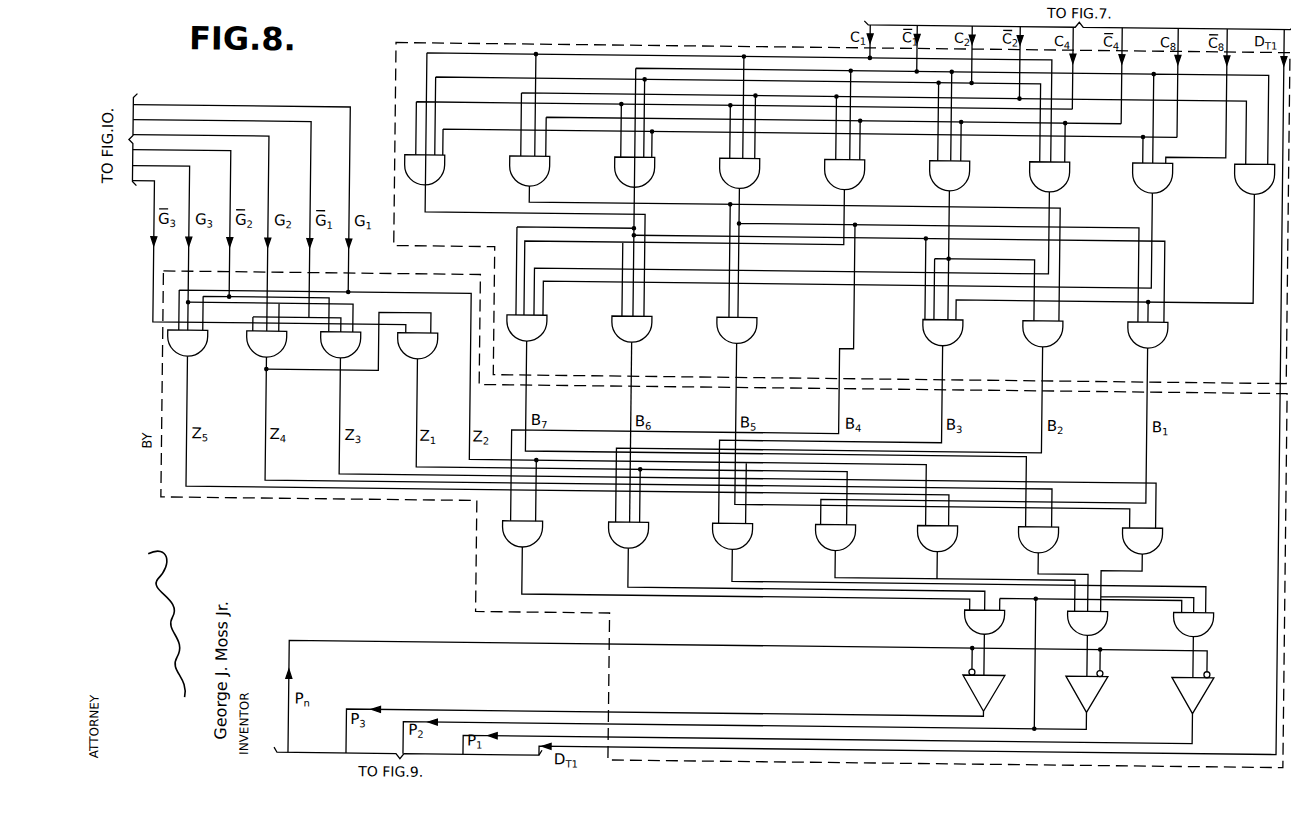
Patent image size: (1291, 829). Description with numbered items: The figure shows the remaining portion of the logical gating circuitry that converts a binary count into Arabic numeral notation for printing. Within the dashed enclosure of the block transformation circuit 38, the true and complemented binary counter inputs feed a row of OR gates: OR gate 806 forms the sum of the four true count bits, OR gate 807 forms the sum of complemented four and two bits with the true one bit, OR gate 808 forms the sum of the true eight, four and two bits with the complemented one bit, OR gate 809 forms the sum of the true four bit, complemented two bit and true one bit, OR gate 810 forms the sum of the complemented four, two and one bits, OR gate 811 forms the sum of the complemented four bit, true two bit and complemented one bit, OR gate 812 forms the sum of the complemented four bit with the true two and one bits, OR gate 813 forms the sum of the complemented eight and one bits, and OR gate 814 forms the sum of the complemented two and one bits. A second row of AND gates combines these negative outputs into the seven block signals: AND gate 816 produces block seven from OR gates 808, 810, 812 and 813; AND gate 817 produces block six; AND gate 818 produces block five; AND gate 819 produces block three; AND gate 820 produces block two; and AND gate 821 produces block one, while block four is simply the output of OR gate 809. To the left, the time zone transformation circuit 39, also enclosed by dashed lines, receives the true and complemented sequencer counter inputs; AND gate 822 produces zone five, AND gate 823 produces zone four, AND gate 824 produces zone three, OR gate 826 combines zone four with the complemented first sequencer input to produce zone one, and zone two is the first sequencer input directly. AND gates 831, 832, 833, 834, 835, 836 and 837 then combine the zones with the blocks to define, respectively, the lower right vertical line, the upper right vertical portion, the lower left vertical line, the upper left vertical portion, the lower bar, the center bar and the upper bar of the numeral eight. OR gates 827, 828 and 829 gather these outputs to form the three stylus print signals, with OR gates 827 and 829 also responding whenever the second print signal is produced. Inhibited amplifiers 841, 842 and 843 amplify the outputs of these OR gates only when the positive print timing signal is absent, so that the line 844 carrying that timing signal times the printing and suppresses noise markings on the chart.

The block transformation circuit 38 is at (462, 44).
The time zone transformation circuit 39 is at (162, 345).
The OR gate 806 is at (439, 178).
The OR gate 807 is at (544, 178).
The OR gate 808 is at (649, 178).
The OR gate 809 is at (754, 178).
The OR gate 810 is at (859, 178).
The OR gate 811 is at (964, 178).
The OR gate 812 is at (1064, 178).
The OR gate 813 is at (1167, 178).
The OR gate 814 is at (1235, 178).
The AND gate 816 is at (543, 333).
The AND gate 817 is at (648, 333).
The AND gate 818 is at (753, 333).
The AND gate 819 is at (959, 333).
The AND gate 820 is at (1059, 333).
The AND gate 821 is at (1164, 333).
The AND gate 822 is at (166, 352).
The AND gate 823 is at (247, 350).
The AND gate 824 is at (321, 350).
The OR gate 826 is at (433, 352).
The OR gate 827 is at (968, 620).
The OR gate 828 is at (1071, 620).
The OR gate 829 is at (1177, 620).
The AND gate 831 is at (541, 539).
The AND gate 832 is at (647, 539).
The AND gate 833 is at (751, 539).
The AND gate 834 is at (854, 539).
The AND gate 835 is at (956, 539).
The AND gate 836 is at (1057, 539).
The AND gate 837 is at (1161, 539).
The inhibited amplifier 841 is at (972, 684).
The inhibited amplifier 842 is at (1075, 684).
The inhibited amplifier 843 is at (1181, 684).
The print control line 844 is at (746, 687).